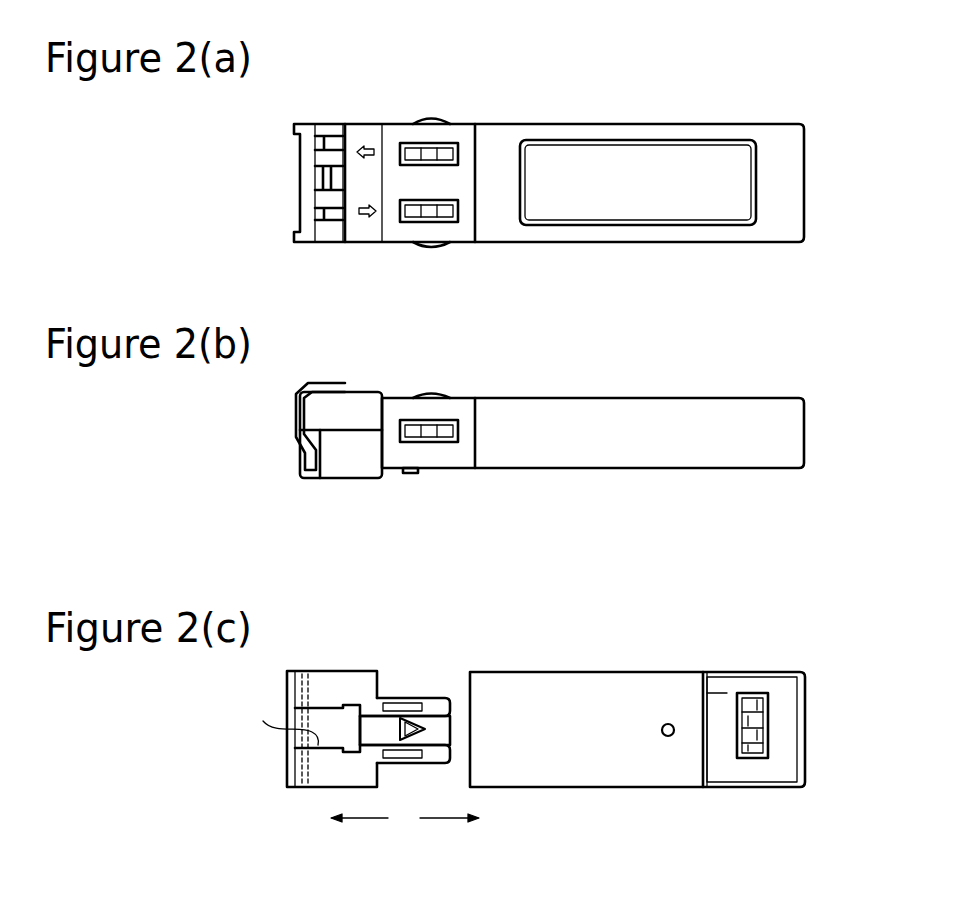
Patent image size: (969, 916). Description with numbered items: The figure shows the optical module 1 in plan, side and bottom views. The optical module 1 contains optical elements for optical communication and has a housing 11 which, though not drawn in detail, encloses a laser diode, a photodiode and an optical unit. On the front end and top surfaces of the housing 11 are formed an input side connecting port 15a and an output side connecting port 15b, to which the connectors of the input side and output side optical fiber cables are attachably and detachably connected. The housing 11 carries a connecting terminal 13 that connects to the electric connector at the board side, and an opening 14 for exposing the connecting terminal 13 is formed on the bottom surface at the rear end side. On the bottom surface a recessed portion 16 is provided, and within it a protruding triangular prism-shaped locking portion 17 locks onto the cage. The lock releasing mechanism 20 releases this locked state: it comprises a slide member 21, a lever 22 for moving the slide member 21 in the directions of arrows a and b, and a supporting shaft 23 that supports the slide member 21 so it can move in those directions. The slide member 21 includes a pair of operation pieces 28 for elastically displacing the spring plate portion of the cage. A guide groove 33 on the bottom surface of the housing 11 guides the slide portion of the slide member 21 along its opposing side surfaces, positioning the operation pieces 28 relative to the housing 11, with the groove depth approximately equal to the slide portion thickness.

In FIG. 2C, the optical module 1 is at (571, 736).
In FIG. 2A, the housing 11 is at (496, 146).
In FIG. 2B, the housing 11 is at (508, 412).
In FIG. 2C, the housing 11 is at (511, 692).
In FIG. 2C, the connecting terminal 13 is at (717, 707).
In FIG. 2C, the opening 14 is at (780, 768).
In FIG. 2A, the input side connecting port 15a is at (333, 208).
In FIG. 2A, the output side connecting port 15b is at (333, 158).
In FIG. 2C, the recessed portion 16 is at (340, 768).
In FIG. 2B, the locking portion 17 is at (413, 474).
In FIG. 2C, the locking portion 17 is at (425, 729).
In FIG. 2C, the lock releasing mechanism 20 is at (422, 736).
In FIG. 2C, the slide member 21 is at (325, 725).
In FIG. 2B, the lever 22 is at (297, 418).
In FIG. 2C, the supporting shaft 23 is at (312, 690).
In FIG. 2C, the operation pieces 28 is at (398, 708).
In FIG. 2C, the guide groove 33 is at (276, 724).